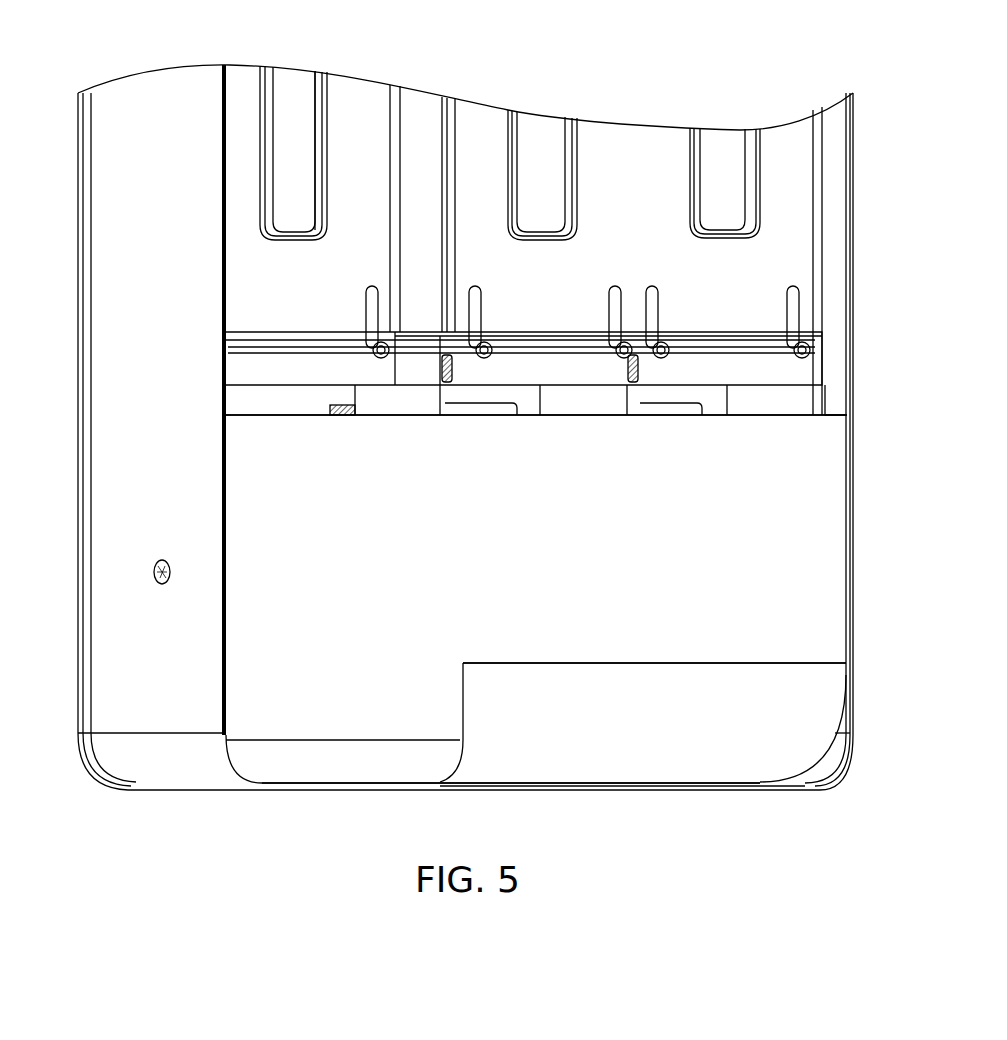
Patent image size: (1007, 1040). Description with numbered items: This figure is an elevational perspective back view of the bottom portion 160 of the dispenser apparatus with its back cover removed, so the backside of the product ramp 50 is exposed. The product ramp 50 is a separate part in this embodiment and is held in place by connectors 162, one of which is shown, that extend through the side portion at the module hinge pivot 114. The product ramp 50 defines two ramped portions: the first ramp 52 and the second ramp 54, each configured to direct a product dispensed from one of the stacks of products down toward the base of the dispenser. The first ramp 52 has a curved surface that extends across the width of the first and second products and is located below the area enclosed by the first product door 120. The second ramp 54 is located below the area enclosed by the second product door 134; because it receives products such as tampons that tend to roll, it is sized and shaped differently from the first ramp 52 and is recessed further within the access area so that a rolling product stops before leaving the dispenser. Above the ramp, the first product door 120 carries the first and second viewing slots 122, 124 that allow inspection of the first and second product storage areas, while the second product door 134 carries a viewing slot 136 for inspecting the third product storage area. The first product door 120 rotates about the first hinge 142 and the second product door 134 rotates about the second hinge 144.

The product ramp 50 is at (810, 600).
The first ramp 52 is at (823, 710).
The second ramp 54 is at (335, 763).
The module hinge pivot 114 is at (158, 588).
The first product door 120 is at (785, 200).
The first viewing slot 122 is at (722, 145).
The second viewing slot 124 is at (538, 128).
The second product door 134 is at (365, 113).
The viewing slot 136 is at (297, 125).
The first hinge 142 is at (750, 330).
The second hinge 144 is at (288, 335).
The bottom portion 160 is at (587, 626).
The connector 162 is at (155, 562).